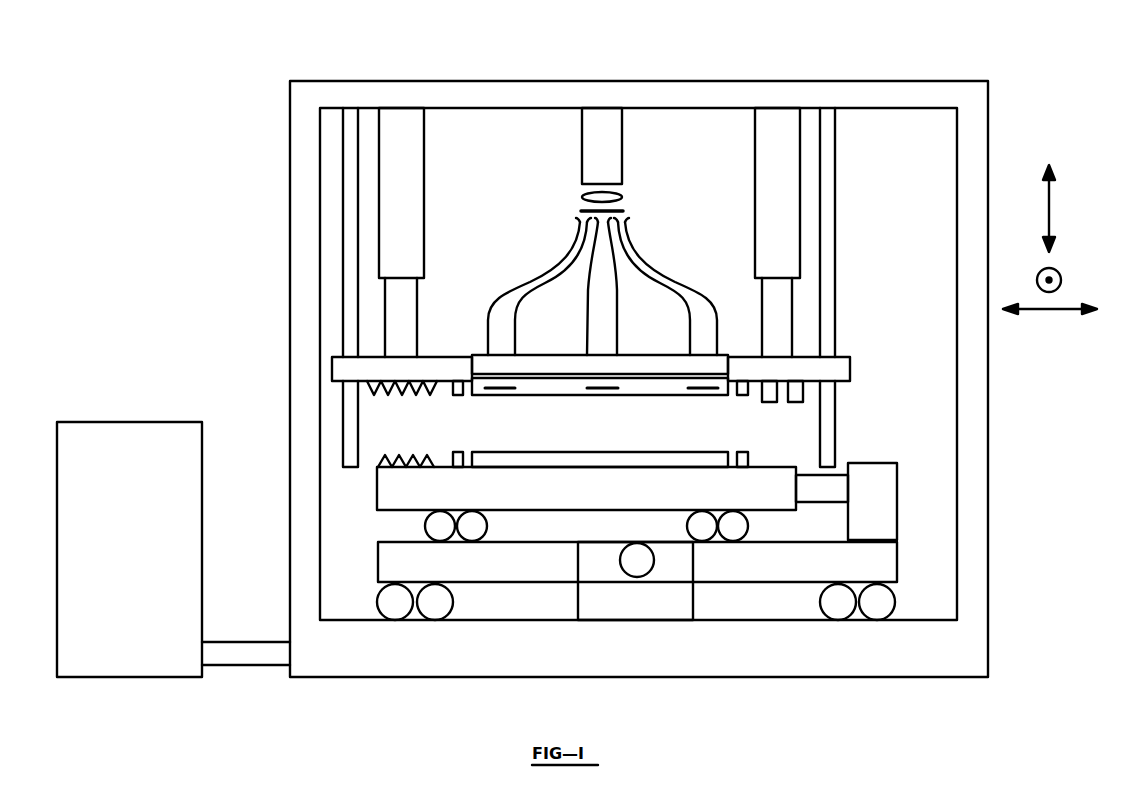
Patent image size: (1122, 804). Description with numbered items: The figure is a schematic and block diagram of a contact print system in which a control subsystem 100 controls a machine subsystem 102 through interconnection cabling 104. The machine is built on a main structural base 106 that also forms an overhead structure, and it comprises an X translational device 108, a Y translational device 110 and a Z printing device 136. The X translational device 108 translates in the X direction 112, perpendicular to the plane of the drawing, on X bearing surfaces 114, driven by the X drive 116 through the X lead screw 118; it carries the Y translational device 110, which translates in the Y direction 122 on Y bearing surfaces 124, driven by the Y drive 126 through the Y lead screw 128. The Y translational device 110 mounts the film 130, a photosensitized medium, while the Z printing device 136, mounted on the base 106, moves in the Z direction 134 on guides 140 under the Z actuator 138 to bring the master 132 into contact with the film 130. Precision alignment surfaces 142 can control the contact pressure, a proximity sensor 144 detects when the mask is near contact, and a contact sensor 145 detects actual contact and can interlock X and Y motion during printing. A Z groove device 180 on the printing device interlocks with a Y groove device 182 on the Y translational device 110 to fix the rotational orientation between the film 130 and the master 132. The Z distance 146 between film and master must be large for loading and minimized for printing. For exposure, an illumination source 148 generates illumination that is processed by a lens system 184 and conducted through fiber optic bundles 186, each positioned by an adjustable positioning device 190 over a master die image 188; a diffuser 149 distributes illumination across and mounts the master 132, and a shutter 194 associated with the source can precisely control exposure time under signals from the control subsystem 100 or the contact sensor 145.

The control subsystem 100 is at (120, 422).
The machine subsystem 102 is at (612, 62).
The interconnection cabling 104 is at (222, 642).
The main structural base 106 is at (290, 272).
The X translational device 108 is at (378, 542).
The Y translational device 110 is at (377, 490).
The X direction 112 is at (1052, 277).
The X bearing surfaces 114 is at (450, 617).
The X drive 116 is at (578, 602).
The X lead screw 118 is at (636, 576).
The Y direction 122 is at (1053, 311).
The Y bearing surfaces 124 is at (486, 538).
The Y drive 126 is at (897, 497).
The Y lead screw 128 is at (837, 475).
The film 130 is at (675, 453).
The master 132 is at (553, 398).
The Z direction 134 is at (1050, 212).
The Z printing device 136 is at (850, 371).
The Z actuator 138 is at (425, 248).
The guides 140 is at (836, 322).
The precision alignment surfaces 142 is at (458, 396).
The proximity sensor 144 is at (768, 403).
The contact sensor 145 is at (794, 403).
The Z distance 146 is at (602, 404).
The illumination source 148 is at (624, 160).
The diffuser 149 is at (728, 382).
The Z groove device 180 is at (405, 396).
The Y groove device 182 is at (396, 455).
The lens system 184 is at (624, 198).
The fiber optic bundles 186 is at (587, 311).
The master die image 188 is at (500, 390).
The positioning device 190 is at (472, 365).
The shutter 194 is at (624, 211).